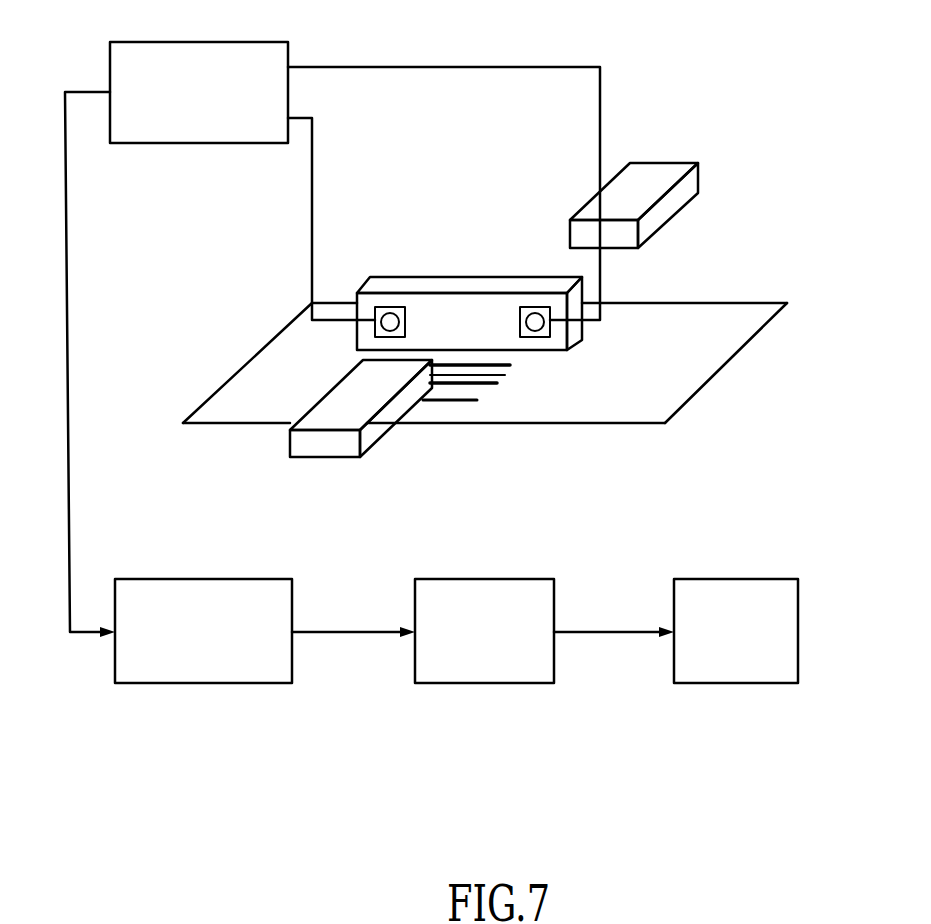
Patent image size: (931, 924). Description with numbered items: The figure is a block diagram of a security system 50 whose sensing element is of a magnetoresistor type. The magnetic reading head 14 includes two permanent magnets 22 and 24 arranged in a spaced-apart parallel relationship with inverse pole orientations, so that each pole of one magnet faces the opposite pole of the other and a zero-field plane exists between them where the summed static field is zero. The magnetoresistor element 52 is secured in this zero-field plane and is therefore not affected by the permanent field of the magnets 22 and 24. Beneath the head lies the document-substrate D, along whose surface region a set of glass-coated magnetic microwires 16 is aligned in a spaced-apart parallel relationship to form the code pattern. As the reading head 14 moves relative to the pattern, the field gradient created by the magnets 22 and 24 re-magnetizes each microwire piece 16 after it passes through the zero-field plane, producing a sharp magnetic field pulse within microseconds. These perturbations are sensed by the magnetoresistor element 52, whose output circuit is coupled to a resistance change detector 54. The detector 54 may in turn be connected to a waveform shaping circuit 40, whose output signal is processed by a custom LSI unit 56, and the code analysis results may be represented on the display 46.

The security system 50 is at (735, 54).
The resistance change detector 54 is at (173, 143).
The magnetic reading head 14 is at (446, 222).
The magnetoresistor element 52 is at (477, 283).
The permanent magnet 24 is at (680, 212).
The permanent magnet 22 is at (370, 432).
The document-substrate D is at (718, 318).
The glass-coated magnetic microwires 16 is at (500, 384).
The waveform shaping circuit 40 is at (215, 579).
The custom LSI unit 56 is at (485, 579).
The display 46 is at (728, 579).